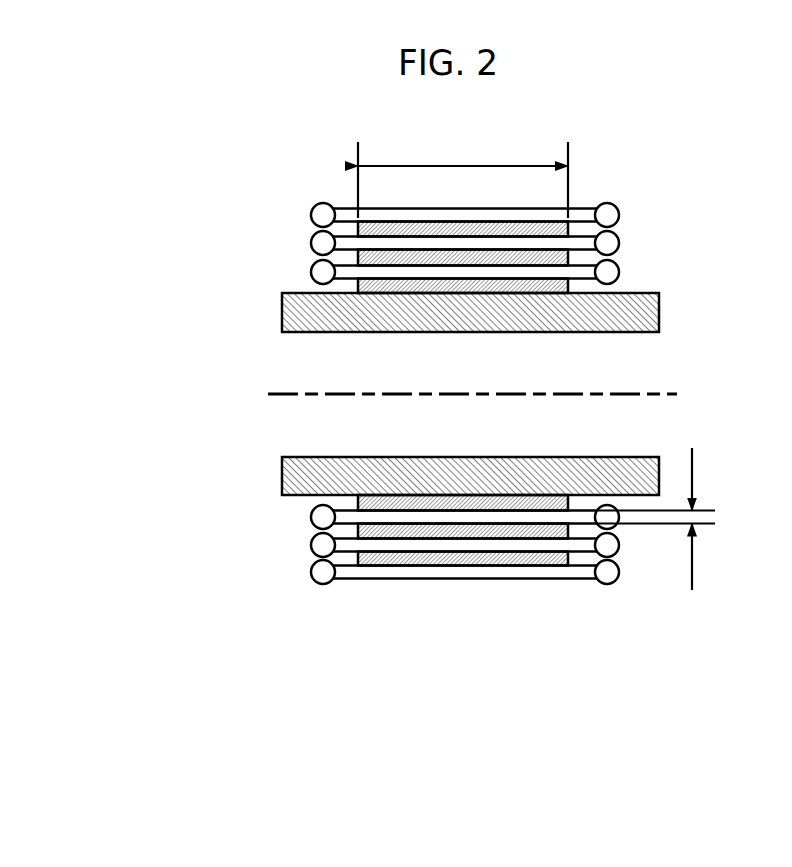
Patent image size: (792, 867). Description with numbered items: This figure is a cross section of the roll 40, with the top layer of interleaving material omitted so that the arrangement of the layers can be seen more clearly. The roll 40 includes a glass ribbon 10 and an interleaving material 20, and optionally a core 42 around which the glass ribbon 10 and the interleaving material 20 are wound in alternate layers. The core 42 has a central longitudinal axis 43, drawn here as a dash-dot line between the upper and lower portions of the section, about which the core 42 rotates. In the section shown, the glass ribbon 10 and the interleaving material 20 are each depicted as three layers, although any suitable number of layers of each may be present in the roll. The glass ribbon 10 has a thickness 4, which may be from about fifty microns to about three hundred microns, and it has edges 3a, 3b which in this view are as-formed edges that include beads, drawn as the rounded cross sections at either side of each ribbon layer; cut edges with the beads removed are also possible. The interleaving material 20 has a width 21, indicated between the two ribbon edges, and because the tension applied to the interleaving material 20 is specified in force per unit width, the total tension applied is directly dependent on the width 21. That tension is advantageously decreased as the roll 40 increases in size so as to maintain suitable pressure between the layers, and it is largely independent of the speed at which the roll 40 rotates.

The roll 40 is at (242, 228).
The interleaving material 20 is at (542, 285).
The width of the interleaving material 21 is at (463, 180).
The central longitudinal axis 43 is at (278, 393).
The core 42 is at (305, 467).
The glass ribbon 10 is at (462, 572).
The edge of the glass ribbon 3a is at (603, 543).
The edge of the glass ribbon 3b is at (320, 572).
The thickness of the glass ribbon 4 is at (657, 519).